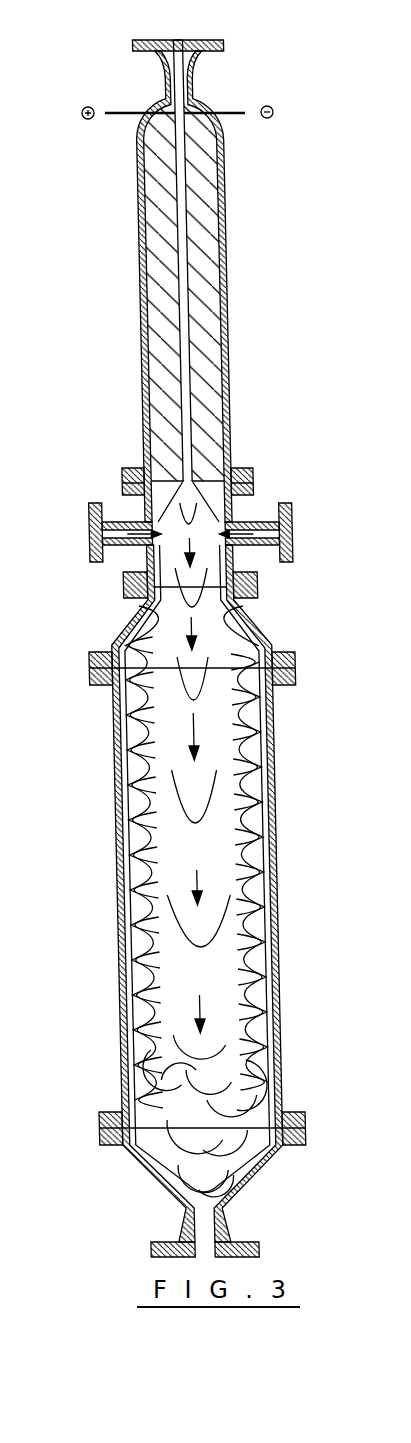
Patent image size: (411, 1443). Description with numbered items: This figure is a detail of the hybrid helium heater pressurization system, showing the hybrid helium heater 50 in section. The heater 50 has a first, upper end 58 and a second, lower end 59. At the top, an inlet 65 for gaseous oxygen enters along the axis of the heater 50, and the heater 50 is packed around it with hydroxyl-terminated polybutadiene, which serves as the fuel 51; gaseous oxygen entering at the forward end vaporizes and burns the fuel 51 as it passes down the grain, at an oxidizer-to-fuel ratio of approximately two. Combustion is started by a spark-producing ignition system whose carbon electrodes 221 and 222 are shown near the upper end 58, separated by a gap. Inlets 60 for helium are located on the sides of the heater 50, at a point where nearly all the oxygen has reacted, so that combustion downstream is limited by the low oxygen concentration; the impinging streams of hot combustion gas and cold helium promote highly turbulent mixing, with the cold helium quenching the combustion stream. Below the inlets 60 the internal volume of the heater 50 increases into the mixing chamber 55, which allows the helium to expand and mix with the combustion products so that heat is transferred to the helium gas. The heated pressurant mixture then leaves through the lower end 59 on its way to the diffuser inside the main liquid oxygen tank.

The first, upper end 58 is at (134, 44).
The inlet for GO2 65 is at (183, 43).
The carbon electrode 221 is at (122, 108).
The carbon electrode 222 is at (232, 108).
The hybrid helium heater 50 is at (207, 175).
The fuel 51 is at (162, 231).
The inlets for helium 60 is at (90, 512).
The mixing chamber 55 is at (272, 763).
The second, lower end 59 is at (152, 1249).